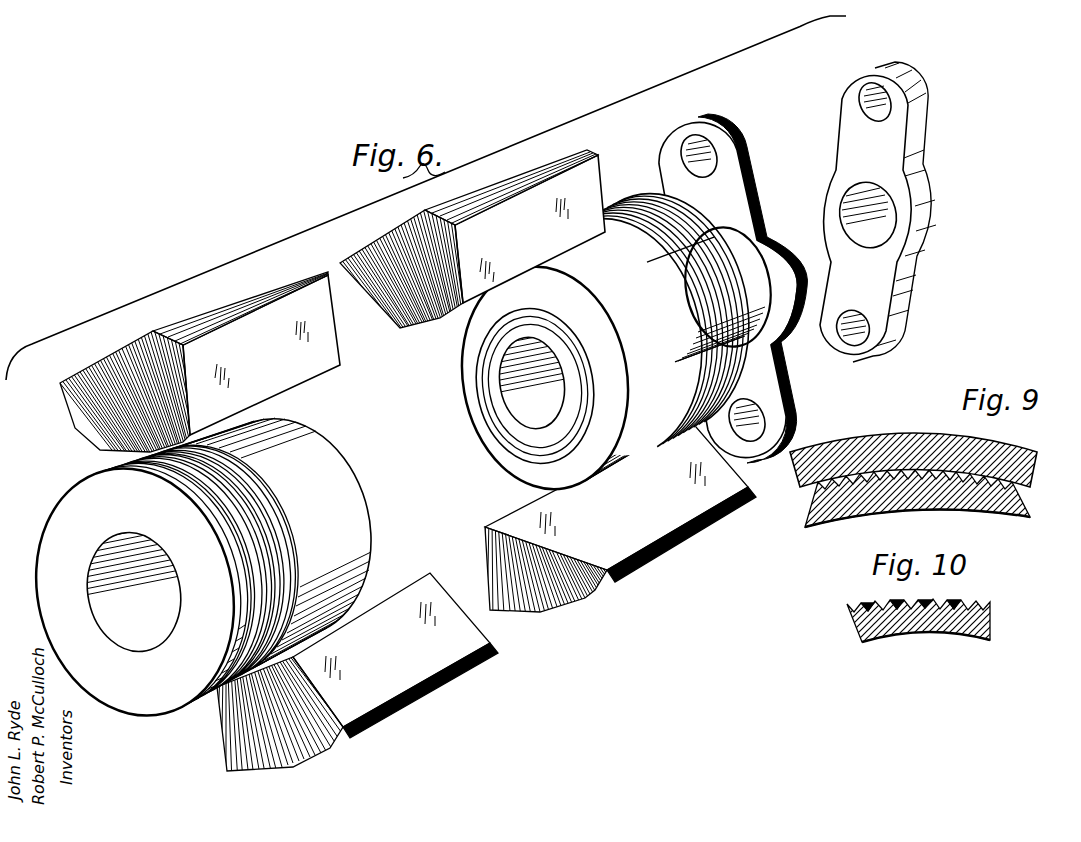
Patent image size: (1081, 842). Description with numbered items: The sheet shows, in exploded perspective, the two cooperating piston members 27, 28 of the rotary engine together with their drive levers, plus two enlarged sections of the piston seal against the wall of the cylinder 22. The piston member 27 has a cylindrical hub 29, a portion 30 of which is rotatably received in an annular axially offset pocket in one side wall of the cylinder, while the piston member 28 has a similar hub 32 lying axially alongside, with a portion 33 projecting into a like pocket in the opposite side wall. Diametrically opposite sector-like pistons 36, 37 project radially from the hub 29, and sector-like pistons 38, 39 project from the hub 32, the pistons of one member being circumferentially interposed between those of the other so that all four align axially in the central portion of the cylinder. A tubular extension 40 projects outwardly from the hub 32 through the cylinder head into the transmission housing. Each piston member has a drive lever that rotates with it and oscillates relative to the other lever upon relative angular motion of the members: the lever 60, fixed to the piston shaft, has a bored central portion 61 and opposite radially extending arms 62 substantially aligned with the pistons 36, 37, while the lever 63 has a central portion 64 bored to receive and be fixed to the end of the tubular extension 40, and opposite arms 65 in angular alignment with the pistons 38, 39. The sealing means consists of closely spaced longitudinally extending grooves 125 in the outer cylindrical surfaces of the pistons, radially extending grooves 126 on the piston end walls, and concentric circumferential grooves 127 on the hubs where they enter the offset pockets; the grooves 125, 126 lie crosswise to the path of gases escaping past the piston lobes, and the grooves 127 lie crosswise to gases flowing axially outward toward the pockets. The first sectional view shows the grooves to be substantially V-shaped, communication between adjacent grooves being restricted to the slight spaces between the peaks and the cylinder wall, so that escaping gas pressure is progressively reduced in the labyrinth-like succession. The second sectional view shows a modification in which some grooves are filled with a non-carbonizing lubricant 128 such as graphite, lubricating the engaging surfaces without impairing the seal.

In FIG. 9, the cylinder 22 is at (880, 442).
In FIG. 6, the piston member 27 is at (150, 724).
In FIG. 6, the piston member 28 is at (523, 491).
In FIG. 6, the cylindrical hub 29 is at (197, 581).
In FIG. 6, the portion of hub 30 is at (79, 467).
In FIG. 6, the hub 32 is at (630, 305).
In FIG. 6, the portion of hub 33 is at (660, 215).
In FIG. 6, the sector-like piston 36 is at (85, 358).
In FIG. 6, the sector-like piston 37 is at (300, 767).
In FIG. 6, the sector-like piston 38 is at (395, 235).
In FIG. 6, the sector-like piston 39 is at (580, 600).
In FIG. 6, the tubular extension 40 is at (750, 290).
In FIG. 6, the drive lever 60 is at (899, 204).
In FIG. 6, the central portion 61 is at (915, 223).
In FIG. 6, the radially extending arms 62 is at (915, 85).
In FIG. 6, the drive lever 63 is at (753, 279).
In FIG. 6, the central portion 64 is at (778, 262).
In FIG. 6, the radially extending arms 65 is at (750, 128).
In FIG. 6, the longitudinally extending grooves 125 is at (210, 302).
In FIG. 9, the longitudinally extending grooves 125 is at (1005, 478).
In FIG. 10, the longitudinally extending grooves 125 is at (975, 608).
In FIG. 6, the radially extending grooves 126 is at (100, 398).
In FIG. 6, the concentric circumferential grooves 127 is at (245, 500).
In FIG. 10, the non-carbonizing lubricant 128 is at (868, 610).